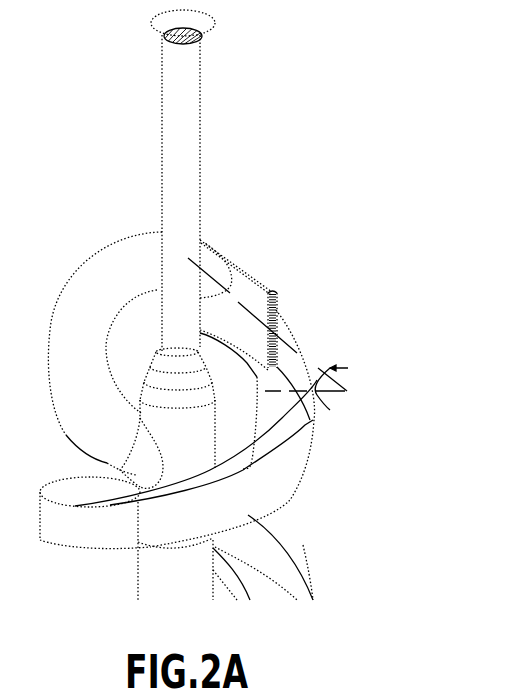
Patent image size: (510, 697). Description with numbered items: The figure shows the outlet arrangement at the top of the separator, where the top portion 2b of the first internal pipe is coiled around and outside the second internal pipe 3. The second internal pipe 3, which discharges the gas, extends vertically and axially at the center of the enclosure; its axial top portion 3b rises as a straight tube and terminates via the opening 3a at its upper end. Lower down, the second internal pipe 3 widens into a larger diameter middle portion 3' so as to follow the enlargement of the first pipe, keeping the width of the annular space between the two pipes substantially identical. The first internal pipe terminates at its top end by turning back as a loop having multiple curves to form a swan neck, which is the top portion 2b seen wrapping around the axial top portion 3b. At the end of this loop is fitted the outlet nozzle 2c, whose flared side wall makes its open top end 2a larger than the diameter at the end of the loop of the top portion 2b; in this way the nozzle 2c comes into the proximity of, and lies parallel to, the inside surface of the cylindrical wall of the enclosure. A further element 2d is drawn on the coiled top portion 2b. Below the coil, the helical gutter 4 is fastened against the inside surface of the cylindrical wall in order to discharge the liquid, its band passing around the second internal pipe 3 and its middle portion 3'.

The second internal pipe 3 is at (69, 353).
The opening 3a is at (185, 30).
The axial top portion 3b is at (176, 135).
The open top end 2a is at (276, 310).
The top portion 2b is at (137, 252).
The outlet nozzle 2c is at (252, 289).
The protrusion 2d is at (160, 459).
The helical gutter 4 is at (270, 477).
The larger diameter middle portion 3' is at (157, 551).